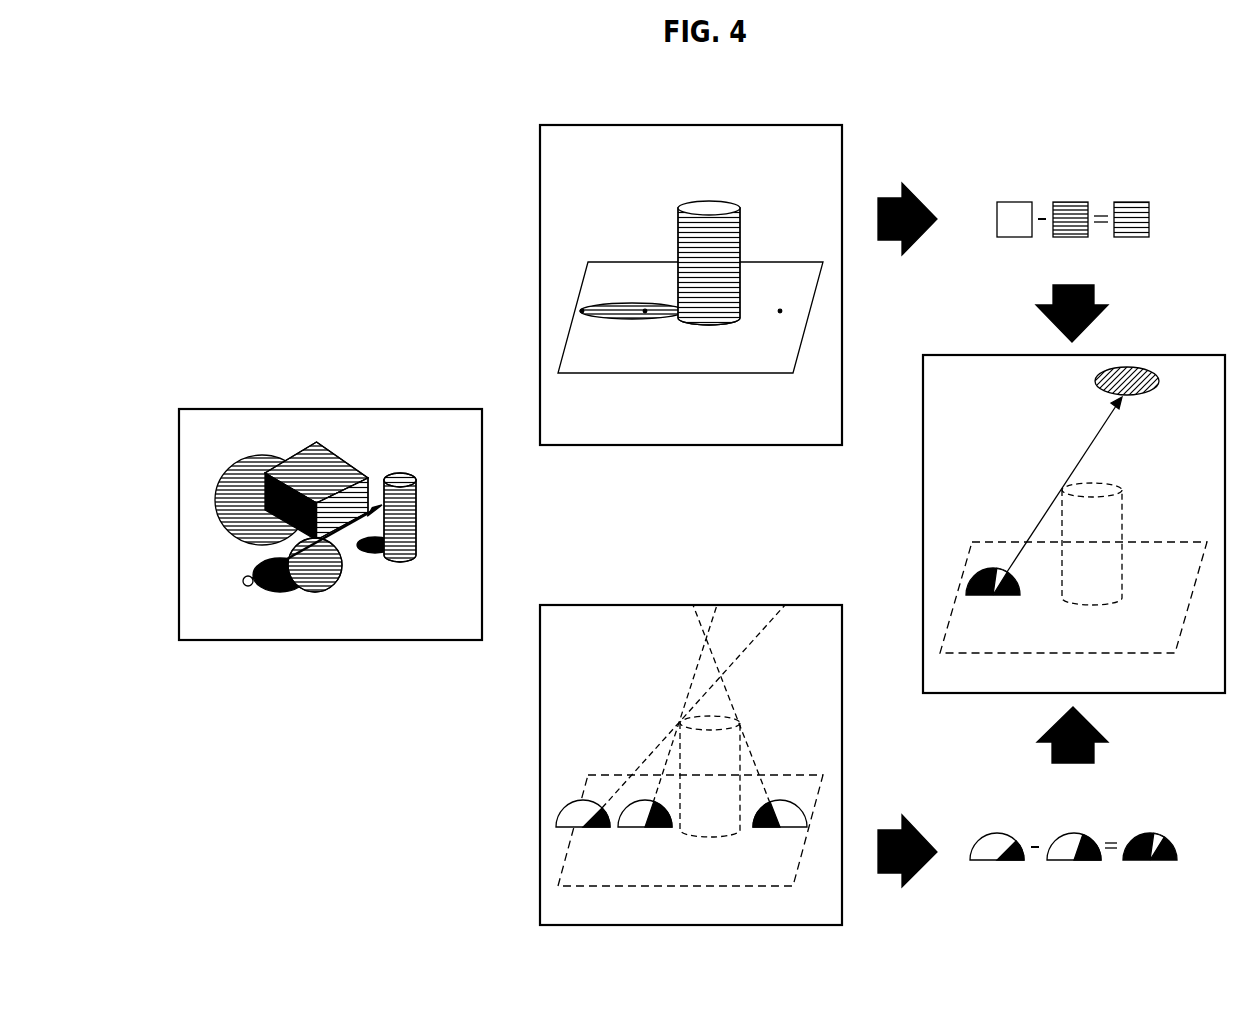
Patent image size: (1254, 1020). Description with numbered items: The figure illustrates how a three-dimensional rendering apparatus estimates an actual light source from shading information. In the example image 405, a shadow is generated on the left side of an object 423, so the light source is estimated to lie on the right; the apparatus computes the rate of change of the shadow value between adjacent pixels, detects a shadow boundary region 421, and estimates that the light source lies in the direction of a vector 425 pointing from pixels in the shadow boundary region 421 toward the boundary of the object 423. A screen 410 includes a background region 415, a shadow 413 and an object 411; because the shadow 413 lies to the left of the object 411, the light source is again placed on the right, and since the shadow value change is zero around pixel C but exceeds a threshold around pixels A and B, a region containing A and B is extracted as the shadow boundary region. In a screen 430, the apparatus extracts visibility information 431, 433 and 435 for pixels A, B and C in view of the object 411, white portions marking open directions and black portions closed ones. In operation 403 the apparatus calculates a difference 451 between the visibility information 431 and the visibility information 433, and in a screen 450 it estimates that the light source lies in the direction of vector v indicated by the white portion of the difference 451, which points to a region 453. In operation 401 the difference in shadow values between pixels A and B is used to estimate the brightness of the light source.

The operation 401 is at (1078, 178).
The operation 403 is at (1083, 811).
The example image 405 is at (330, 408).
The screen 410 is at (690, 124).
The object 411 is at (707, 200).
The shadow 413 is at (630, 303).
The background region 415 is at (677, 373).
The shadow boundary region 421 is at (248, 587).
The object 423 is at (325, 588).
The vector 425 is at (342, 530).
The screen 430 is at (692, 604).
The visibility information 431 is at (573, 800).
The visibility information 433 is at (645, 800).
The visibility information 435 is at (783, 800).
The screen 450 is at (1137, 354).
The difference 451 is at (985, 567).
The light source region 453 is at (1137, 395).